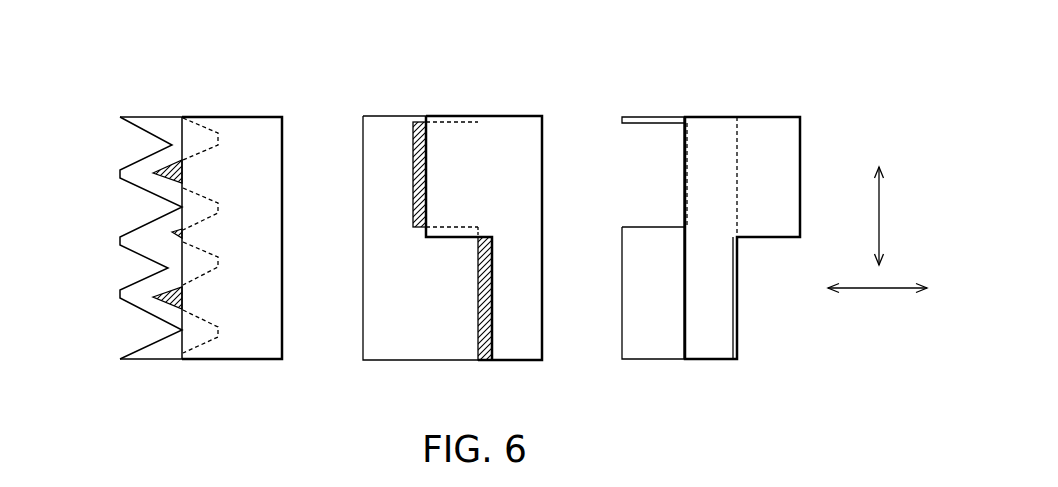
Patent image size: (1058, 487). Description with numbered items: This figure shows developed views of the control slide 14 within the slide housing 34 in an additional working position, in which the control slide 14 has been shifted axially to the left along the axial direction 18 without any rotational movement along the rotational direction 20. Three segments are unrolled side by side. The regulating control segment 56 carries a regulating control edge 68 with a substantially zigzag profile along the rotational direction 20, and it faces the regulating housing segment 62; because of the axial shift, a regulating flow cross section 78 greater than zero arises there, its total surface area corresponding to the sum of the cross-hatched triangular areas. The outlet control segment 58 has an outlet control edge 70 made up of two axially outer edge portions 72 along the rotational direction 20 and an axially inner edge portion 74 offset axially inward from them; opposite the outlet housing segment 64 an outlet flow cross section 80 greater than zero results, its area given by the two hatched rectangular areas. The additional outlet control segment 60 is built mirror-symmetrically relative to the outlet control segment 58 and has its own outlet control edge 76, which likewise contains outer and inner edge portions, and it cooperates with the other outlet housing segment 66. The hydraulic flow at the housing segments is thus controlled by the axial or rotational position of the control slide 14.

The control slide 14 is at (827, 335).
The axial direction 18 is at (890, 287).
The rotational direction 20 is at (879, 228).
The slide housing 34 is at (860, 148).
The regulating control segment 56 is at (135, 313).
The outlet control segment 58 is at (447, 343).
The additional outlet control segment 60 is at (645, 363).
The regulating housing segment 62 is at (260, 363).
The outlet housing segment 64 is at (517, 362).
The outlet housing segment 66 is at (717, 362).
The regulating control edge 68 is at (165, 168).
The outlet control edge 70 is at (431, 210).
The axially outer edge portion 72 is at (413, 182).
The axially inner edge portion 74 is at (478, 317).
The outlet control edge 76 is at (658, 125).
The regulating flow cross section 78 is at (182, 117).
The outlet flow cross section 80 is at (477, 265).